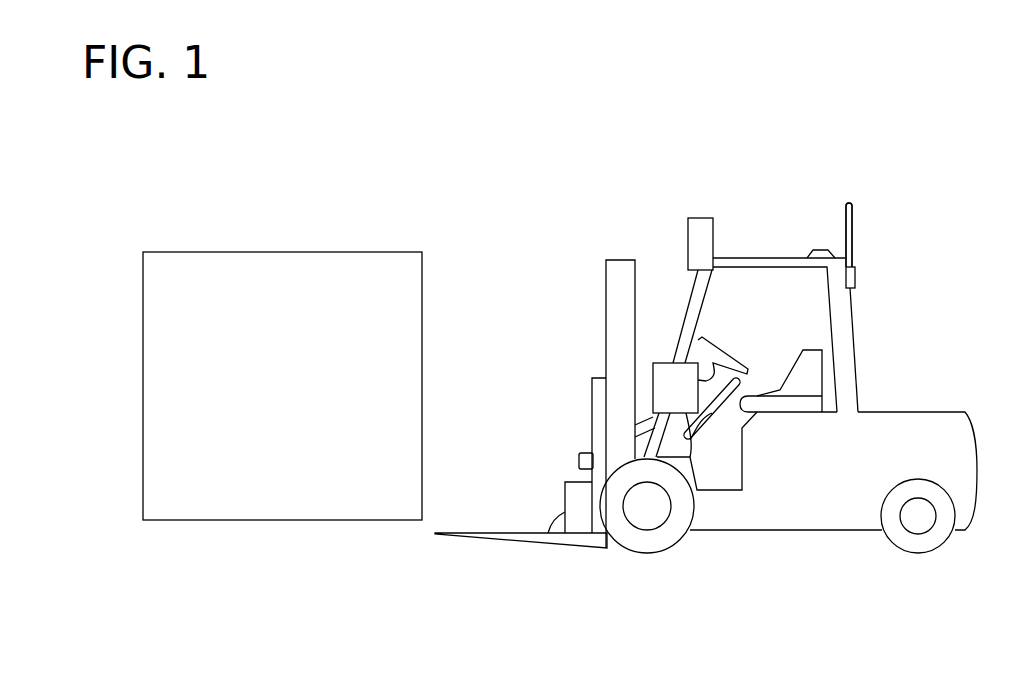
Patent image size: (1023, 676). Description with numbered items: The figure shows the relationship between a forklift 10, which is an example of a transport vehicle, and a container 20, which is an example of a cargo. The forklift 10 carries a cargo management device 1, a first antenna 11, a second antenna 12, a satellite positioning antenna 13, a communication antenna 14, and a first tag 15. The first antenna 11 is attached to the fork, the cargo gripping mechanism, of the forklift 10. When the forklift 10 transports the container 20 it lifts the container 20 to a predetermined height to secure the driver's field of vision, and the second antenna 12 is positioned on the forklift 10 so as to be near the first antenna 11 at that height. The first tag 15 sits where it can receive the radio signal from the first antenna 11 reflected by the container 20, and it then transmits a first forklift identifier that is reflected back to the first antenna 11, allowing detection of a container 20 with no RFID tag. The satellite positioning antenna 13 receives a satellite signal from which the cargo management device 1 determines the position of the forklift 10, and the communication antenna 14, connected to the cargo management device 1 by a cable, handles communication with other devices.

The cargo management device 1 is at (663, 363).
The forklift 10 is at (792, 530).
The first antenna 11 is at (548, 535).
The second antenna 12 is at (700, 218).
The satellite positioning antenna 13 is at (820, 250).
The communication antenna 14 is at (853, 225).
The first tag 15 is at (585, 452).
The container 20 is at (243, 252).